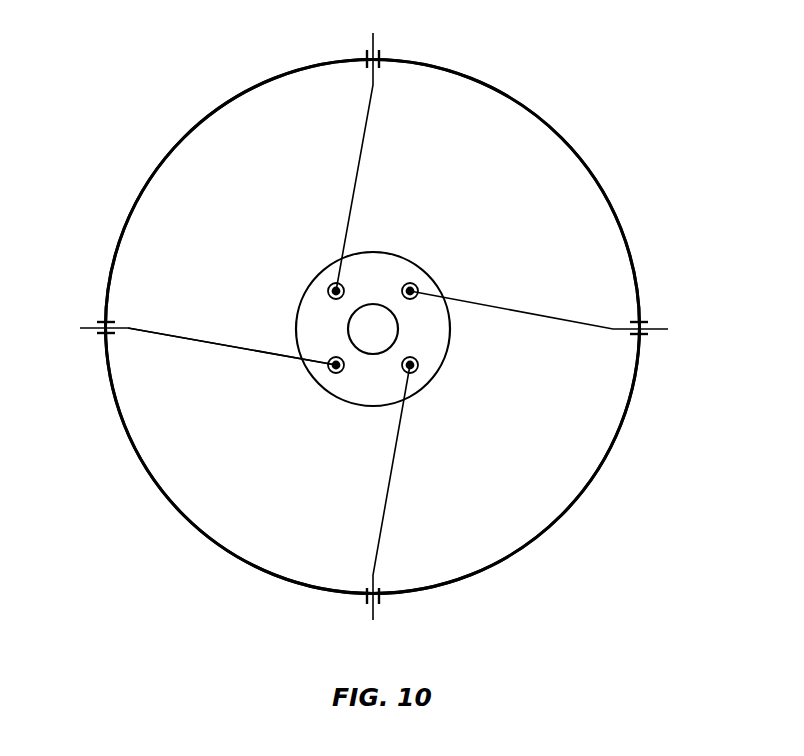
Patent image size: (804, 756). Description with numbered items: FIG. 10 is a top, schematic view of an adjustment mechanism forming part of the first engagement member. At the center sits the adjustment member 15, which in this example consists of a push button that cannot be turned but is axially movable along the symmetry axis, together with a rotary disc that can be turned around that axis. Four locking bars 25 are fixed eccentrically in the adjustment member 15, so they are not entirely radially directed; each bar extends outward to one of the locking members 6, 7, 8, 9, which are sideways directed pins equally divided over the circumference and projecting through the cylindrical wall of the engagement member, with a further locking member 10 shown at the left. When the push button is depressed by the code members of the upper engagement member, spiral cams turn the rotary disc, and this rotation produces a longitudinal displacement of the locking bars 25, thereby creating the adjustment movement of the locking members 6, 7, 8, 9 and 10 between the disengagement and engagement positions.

The locking member 6 is at (362, 611).
The locking member 7 is at (374, 612).
The locking member 8 is at (668, 330).
The locking member 9 is at (372, 43).
The locking member 10 is at (92, 327).
The adjustment member 15 is at (392, 262).
The locking bar 25 is at (215, 343).